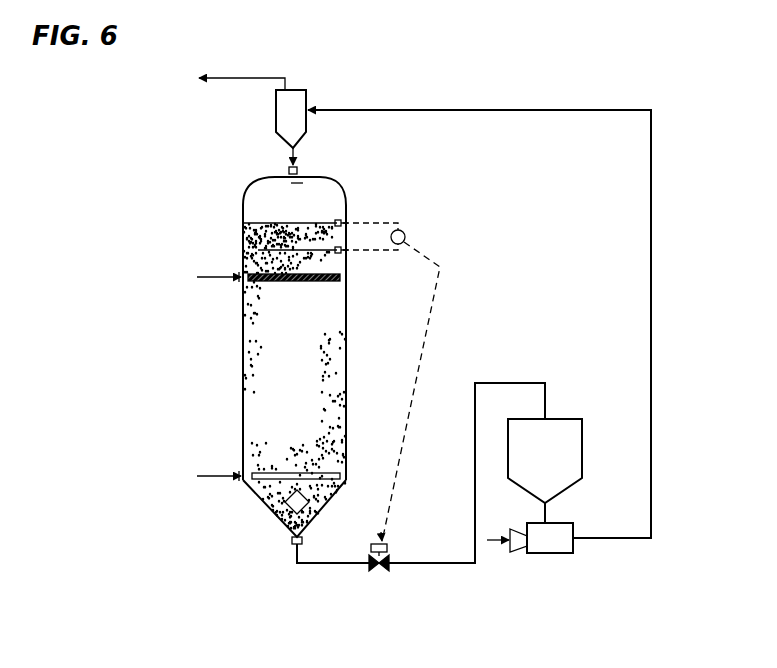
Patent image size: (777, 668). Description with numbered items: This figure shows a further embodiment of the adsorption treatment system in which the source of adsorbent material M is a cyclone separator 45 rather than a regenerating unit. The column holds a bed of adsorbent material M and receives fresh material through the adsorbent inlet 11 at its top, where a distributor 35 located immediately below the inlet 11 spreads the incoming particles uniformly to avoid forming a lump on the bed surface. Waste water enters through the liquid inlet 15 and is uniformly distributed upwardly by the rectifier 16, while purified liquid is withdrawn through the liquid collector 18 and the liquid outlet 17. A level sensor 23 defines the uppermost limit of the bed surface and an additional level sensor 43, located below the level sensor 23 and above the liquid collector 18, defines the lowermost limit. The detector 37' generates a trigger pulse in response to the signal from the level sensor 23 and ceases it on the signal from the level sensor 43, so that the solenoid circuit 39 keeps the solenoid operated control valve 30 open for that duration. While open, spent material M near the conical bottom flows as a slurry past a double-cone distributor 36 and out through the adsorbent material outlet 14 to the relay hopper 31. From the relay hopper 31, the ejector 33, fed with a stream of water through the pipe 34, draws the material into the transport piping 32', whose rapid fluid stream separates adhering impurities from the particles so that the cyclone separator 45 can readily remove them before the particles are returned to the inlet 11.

The adsorbent inlet 11 is at (288, 174).
The adsorbent material outlet 14 is at (292, 545).
The liquid inlet 15 is at (240, 476).
The rectifier 16 is at (312, 473).
The liquid outlet 17 is at (238, 283).
The liquid collector 18 is at (316, 282).
The level sensor 23 is at (347, 222).
The solenoid operated control valve 30 is at (378, 572).
The relay hopper 31 is at (575, 419).
The transport piping 32' is at (533, 324).
The ejector 33 is at (552, 555).
The pipe 34 is at (490, 540).
The distributor 35 is at (298, 183).
The distributor 36 is at (290, 514).
The detector 37' is at (427, 360).
The solenoid circuit 39 is at (388, 543).
The additional level sensor 43 is at (347, 255).
The cyclone separator 45 is at (276, 110).
The adsorbent material M is at (340, 395).